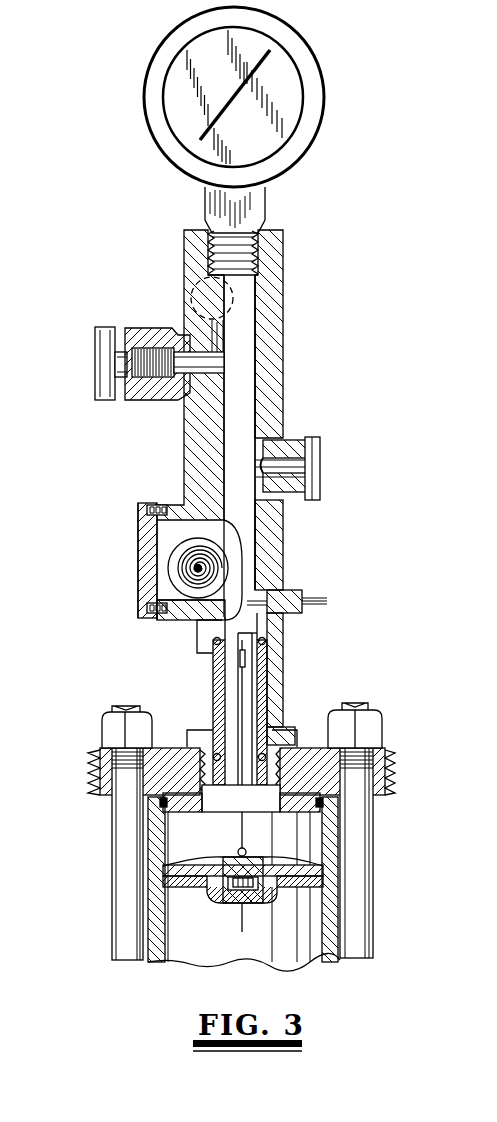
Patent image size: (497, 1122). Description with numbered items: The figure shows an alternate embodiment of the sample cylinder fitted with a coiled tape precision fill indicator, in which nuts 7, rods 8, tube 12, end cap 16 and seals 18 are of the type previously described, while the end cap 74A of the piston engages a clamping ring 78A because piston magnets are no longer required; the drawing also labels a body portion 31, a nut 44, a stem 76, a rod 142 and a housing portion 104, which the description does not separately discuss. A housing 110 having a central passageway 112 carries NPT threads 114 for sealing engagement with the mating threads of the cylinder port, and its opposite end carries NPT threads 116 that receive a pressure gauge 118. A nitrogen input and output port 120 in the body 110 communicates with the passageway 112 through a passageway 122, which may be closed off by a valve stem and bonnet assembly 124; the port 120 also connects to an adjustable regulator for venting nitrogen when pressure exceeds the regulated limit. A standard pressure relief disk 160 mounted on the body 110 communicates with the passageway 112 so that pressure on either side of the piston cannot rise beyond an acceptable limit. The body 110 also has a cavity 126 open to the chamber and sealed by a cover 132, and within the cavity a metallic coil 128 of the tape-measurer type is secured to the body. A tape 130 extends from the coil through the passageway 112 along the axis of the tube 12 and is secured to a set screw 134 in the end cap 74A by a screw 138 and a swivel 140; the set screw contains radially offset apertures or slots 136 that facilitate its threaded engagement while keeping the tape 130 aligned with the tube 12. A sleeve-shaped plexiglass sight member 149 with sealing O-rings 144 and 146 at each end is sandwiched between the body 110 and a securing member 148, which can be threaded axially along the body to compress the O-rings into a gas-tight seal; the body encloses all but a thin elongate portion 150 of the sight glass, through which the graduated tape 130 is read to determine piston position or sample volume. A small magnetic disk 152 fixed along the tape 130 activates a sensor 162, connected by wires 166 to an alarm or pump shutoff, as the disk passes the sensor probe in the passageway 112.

The pressure gauge 118 is at (305, 153).
The NPT threads 116 is at (258, 252).
The valve stem and bonnet assembly 124 is at (125, 333).
The nitrogen input and output port 120 is at (205, 302).
The passageway 122 is at (190, 322).
The central passageway 112 is at (243, 335).
The housing 110 is at (265, 418).
The pressure relief disk 160 is at (310, 460).
The cavity 126 is at (148, 520).
The metallic coil 128 is at (165, 553).
The cover 132 is at (148, 583).
The tape 130 is at (244, 585).
The sensor 162 is at (303, 596).
The wires 166 is at (325, 603).
The housing 104 is at (223, 620).
The sealing O-ring 144 is at (262, 633).
The rod 142 is at (267, 650).
The plexiglass sight member 149 is at (212, 663).
The magnetic disk 152 is at (247, 658).
The thin elongate portion 150 is at (207, 683).
The end cap 16 is at (165, 745).
The body portion 31 is at (211, 757).
The sealing O-ring 146 is at (305, 712).
The nuts 7 is at (363, 727).
The nut 44 is at (393, 777).
The seals 18 is at (163, 805).
The NPT threads 114 is at (283, 765).
The securing member 148 is at (162, 813).
The swivel 140 is at (240, 847).
The radially offset apertures or slots 136 is at (228, 862).
The screw 138 is at (322, 863).
The end cap 74A is at (183, 864).
The rods 8 is at (353, 893).
The clamping ring 78A is at (195, 883).
The set screw 134 is at (220, 892).
The stem 76 is at (245, 886).
The tube 12 is at (157, 947).